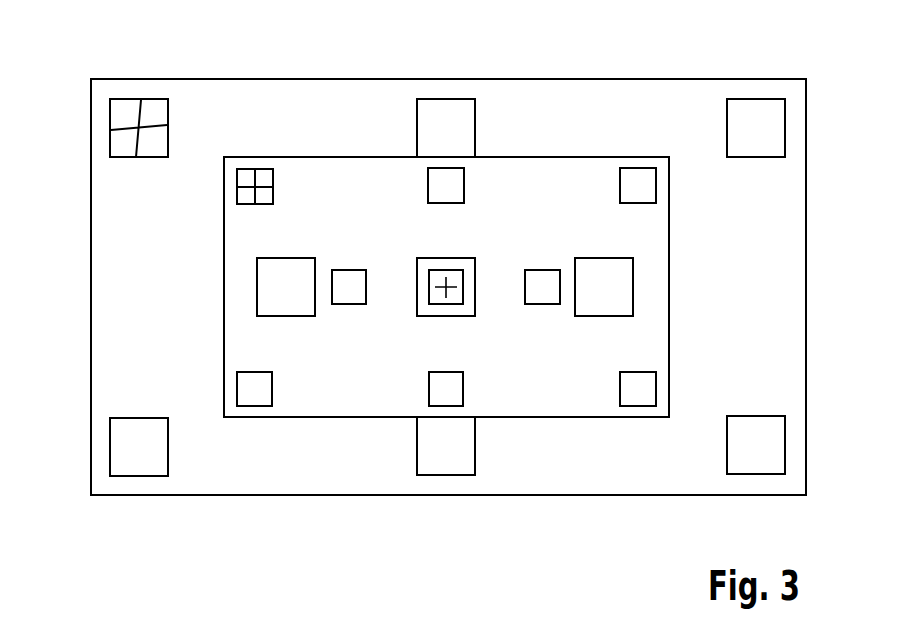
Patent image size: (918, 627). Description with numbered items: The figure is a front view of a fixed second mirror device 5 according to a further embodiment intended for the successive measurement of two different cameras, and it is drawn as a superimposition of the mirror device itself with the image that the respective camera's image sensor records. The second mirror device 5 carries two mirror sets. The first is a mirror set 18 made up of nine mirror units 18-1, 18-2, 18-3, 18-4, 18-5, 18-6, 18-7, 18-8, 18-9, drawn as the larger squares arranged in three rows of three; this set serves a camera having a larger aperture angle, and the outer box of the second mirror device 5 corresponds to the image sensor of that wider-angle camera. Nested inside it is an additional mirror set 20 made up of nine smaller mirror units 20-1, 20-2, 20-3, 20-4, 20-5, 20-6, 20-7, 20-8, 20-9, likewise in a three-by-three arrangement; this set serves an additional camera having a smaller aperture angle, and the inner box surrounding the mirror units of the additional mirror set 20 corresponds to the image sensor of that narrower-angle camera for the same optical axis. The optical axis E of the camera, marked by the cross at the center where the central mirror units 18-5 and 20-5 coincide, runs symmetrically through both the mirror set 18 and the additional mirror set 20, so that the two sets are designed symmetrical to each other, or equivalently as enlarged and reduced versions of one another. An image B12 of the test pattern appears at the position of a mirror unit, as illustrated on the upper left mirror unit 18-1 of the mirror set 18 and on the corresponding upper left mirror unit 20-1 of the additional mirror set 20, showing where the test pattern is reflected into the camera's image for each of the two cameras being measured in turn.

The second mirror device 5 is at (267, 79).
The mirror set 18 is at (297, 507).
The mirror unit 18-1 is at (142, 99).
The mirror unit 18-2 is at (445, 99).
The mirror unit 18-3 is at (755, 99).
The mirror unit 18-4 is at (257, 288).
The mirror unit 18-5 is at (416, 307).
The mirror unit 18-6 is at (634, 288).
The mirror unit 18-7 is at (139, 476).
The mirror unit 18-8 is at (446, 475).
The mirror unit 18-9 is at (755, 474).
The additional mirror set 20 is at (166, 352).
The mirror unit 20-1 is at (260, 169).
The mirror unit 20-2 is at (464, 185).
The mirror unit 20-3 is at (637, 168).
The mirror unit 20-4 is at (350, 270).
The mirror unit 20-5 is at (463, 295).
The mirror unit 20-6 is at (543, 270).
The mirror unit 20-7 is at (272, 388).
The mirror unit 20-8 is at (463, 388).
The mirror unit 20-9 is at (656, 388).
The optical axis E is at (447, 287).
The image of the test pattern B12 is at (132, 147).